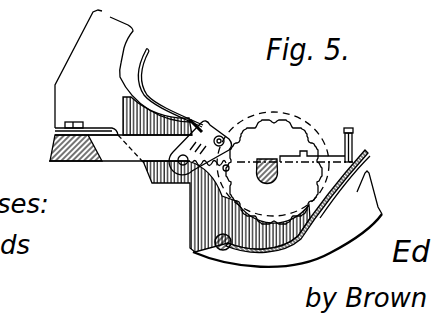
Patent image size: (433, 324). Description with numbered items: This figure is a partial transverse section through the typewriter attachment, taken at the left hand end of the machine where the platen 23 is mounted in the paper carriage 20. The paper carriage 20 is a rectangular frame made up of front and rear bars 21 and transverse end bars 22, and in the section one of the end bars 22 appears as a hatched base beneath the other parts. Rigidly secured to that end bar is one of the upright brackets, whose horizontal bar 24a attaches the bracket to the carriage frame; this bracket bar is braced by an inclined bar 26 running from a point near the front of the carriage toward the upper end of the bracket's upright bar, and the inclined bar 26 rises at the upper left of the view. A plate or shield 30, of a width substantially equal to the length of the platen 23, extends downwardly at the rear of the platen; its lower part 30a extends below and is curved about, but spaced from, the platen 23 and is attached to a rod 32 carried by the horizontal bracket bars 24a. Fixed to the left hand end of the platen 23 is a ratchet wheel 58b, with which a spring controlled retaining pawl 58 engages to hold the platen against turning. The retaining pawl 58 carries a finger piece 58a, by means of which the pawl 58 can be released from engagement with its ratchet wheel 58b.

The paper carriage 20 is at (46, 139).
The front and rear bars 21 is at (72, 162).
The transverse end bars 22 is at (115, 148).
The platen 23 is at (309, 132).
The horizontal bar 24a is at (147, 182).
The inclined bar 26 is at (78, 43).
The plate or shield 30 is at (365, 162).
The curved part of shield 30a is at (282, 252).
The rod 32 is at (217, 252).
The retaining pawl 58 is at (211, 122).
The finger piece 58a is at (148, 90).
The ratchet wheel 58b is at (281, 118).